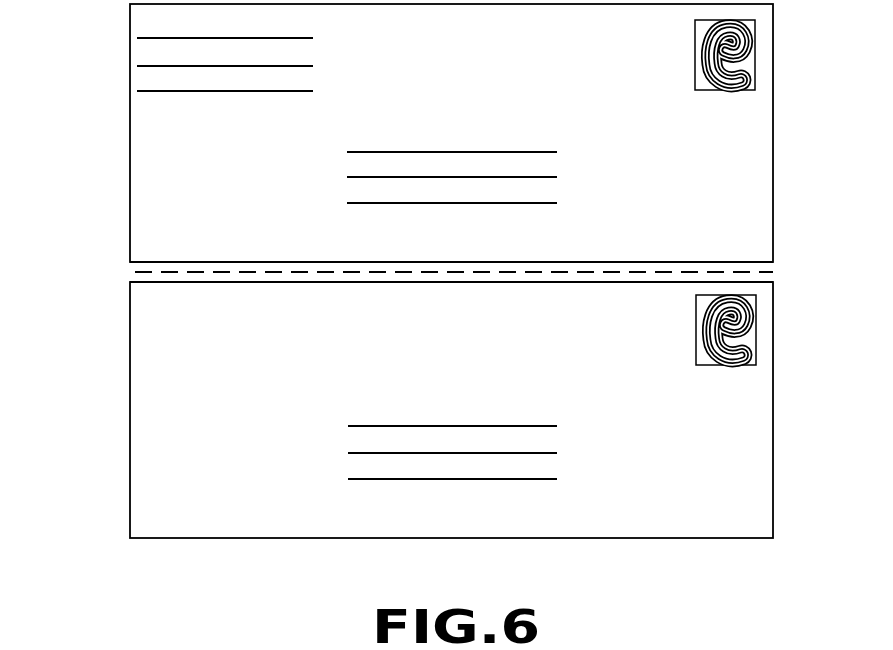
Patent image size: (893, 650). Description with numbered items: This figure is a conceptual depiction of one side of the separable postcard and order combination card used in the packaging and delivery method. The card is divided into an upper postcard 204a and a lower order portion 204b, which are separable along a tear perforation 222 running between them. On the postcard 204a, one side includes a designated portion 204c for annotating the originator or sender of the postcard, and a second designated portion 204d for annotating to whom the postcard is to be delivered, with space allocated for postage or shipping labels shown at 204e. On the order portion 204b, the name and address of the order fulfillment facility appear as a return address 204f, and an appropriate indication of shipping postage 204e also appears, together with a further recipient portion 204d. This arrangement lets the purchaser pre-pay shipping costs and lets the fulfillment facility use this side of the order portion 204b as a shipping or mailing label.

The postcard 204a is at (130, 128).
The order portion 204b is at (130, 402).
The designated portion for annotating an originator or sender 204c is at (145, 51).
The second designated portion 204d is at (368, 163).
The indication of shipping postage 204e is at (755, 65).
The return address 204f is at (155, 325).
The tear perforation 222 is at (130, 272).